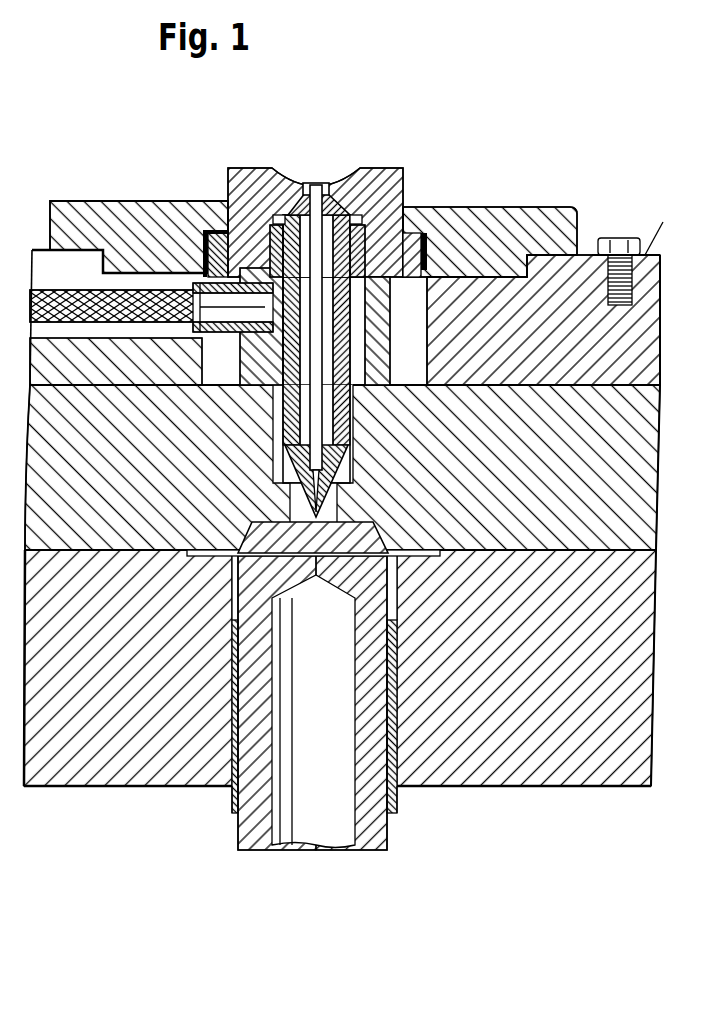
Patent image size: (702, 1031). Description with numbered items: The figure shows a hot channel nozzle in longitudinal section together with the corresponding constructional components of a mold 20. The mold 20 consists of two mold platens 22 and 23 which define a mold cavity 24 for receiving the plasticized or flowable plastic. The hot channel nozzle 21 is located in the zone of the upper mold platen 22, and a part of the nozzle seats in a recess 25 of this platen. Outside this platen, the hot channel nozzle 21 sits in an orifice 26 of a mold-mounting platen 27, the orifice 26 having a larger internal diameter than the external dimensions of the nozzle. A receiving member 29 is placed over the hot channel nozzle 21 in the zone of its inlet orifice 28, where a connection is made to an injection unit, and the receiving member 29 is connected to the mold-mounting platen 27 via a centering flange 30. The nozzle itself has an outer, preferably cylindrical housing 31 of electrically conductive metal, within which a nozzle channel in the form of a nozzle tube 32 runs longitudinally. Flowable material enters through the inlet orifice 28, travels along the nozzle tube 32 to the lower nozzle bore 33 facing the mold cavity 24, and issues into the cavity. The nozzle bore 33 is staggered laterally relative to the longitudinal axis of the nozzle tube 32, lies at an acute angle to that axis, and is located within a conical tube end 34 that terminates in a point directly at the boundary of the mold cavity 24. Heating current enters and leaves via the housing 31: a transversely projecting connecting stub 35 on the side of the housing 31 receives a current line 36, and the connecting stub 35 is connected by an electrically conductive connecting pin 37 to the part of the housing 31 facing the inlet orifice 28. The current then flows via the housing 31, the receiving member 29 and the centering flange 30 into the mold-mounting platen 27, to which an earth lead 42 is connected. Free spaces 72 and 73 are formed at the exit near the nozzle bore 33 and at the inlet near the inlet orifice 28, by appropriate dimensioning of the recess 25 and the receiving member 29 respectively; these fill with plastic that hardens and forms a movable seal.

The mold 20 is at (142, 802).
The hot channel nozzle 21 is at (262, 402).
The mold platen 22 is at (80, 478).
The mold platen 23 is at (77, 703).
The mold cavity 24 is at (236, 578).
The recess 25 is at (275, 437).
The orifice 26 is at (410, 310).
The mold-mounting platen 27 is at (583, 280).
The inlet orifice 28 is at (316, 183).
The receiving member 29 is at (255, 186).
The centering flange 30 is at (93, 220).
The housing 31 is at (364, 378).
The nozzle tube 32 is at (325, 190).
The nozzle bore 33 is at (292, 520).
The conical tube end 34 is at (322, 503).
The connecting stub 35 is at (197, 285).
The current line 36 is at (55, 290).
The connecting pin 37 is at (222, 262).
The earth lead 42 is at (648, 232).
The free space 72 is at (303, 510).
The free space 73 is at (335, 207).